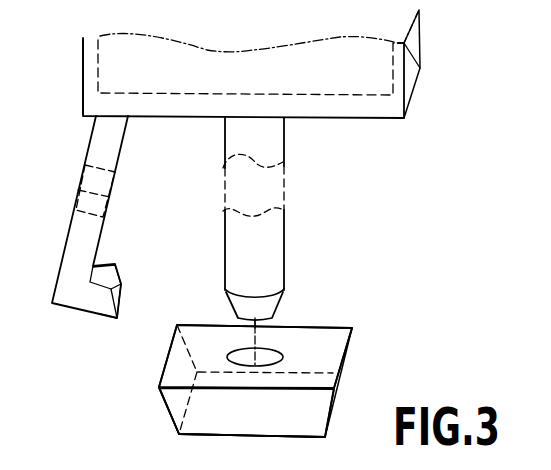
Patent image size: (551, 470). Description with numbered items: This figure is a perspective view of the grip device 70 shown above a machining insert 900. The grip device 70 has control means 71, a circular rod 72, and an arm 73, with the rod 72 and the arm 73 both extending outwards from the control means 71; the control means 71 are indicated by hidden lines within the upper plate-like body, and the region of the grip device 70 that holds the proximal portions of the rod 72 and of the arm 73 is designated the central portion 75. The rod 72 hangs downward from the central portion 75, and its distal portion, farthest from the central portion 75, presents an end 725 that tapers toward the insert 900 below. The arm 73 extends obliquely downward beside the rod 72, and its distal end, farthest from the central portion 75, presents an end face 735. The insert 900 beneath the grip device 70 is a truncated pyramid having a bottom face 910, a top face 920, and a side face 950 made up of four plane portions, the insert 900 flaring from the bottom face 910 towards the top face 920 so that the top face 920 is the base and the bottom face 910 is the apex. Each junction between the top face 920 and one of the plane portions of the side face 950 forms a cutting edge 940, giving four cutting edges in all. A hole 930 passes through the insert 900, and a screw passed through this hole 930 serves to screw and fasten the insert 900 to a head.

The grip device 70 is at (257, 84).
The control means 71 is at (171, 95).
The circular rod 72 is at (273, 242).
The arm 73 is at (75, 237).
The central portion 75 is at (83, 85).
The end 725 is at (243, 302).
The end face 735 is at (120, 278).
The machining insert 900 is at (367, 352).
The bottom face 910 is at (270, 425).
The top face 920 is at (335, 333).
The hole 930 is at (265, 355).
The cutting edge 940 is at (163, 360).
The side face 950 is at (198, 427).